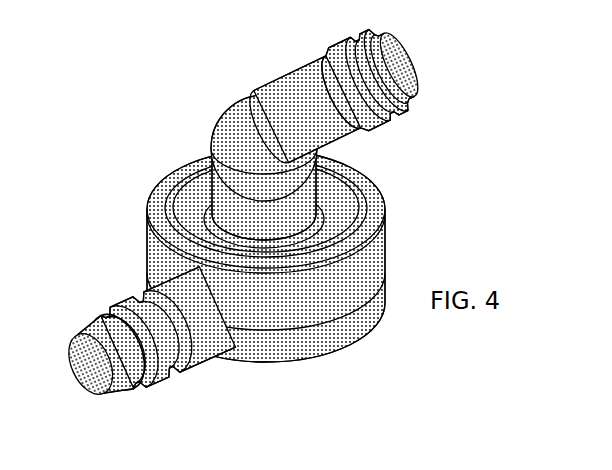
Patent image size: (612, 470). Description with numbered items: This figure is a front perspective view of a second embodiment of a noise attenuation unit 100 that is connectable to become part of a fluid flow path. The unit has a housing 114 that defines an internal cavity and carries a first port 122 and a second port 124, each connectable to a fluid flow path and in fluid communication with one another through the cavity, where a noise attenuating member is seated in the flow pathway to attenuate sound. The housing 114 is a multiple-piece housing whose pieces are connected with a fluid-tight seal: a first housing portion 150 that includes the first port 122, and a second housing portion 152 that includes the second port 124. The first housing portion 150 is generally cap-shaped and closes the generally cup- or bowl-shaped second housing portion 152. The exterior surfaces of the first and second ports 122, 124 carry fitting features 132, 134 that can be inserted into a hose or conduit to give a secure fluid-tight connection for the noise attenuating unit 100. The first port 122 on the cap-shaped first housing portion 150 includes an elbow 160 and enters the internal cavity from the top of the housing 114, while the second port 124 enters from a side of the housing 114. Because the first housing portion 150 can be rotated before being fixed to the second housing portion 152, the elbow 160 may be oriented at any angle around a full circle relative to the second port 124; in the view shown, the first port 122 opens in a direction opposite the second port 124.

The noise attenuation unit 100 is at (289, 223).
The housing 114 is at (302, 256).
The first port 122 is at (272, 88).
The second port 124 is at (115, 393).
The fitting feature 132 is at (336, 48).
The fitting feature 134 is at (103, 302).
The first housing portion 150 is at (371, 190).
The second housing portion 152 is at (353, 326).
The elbow 160 is at (226, 123).